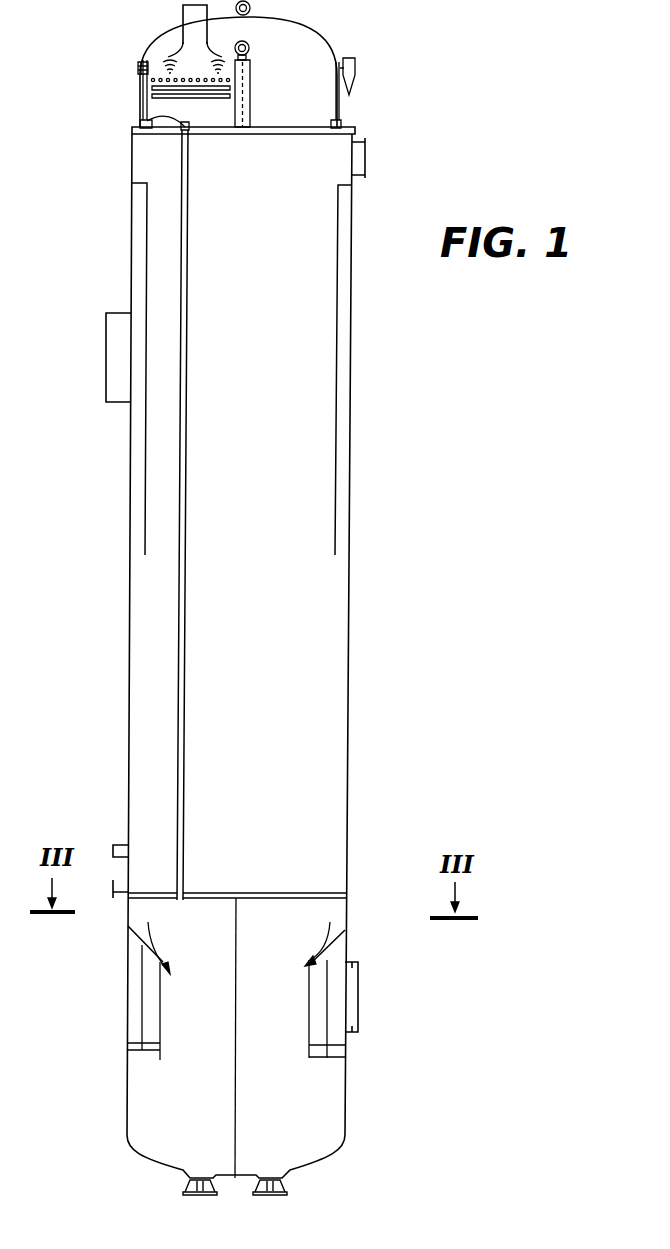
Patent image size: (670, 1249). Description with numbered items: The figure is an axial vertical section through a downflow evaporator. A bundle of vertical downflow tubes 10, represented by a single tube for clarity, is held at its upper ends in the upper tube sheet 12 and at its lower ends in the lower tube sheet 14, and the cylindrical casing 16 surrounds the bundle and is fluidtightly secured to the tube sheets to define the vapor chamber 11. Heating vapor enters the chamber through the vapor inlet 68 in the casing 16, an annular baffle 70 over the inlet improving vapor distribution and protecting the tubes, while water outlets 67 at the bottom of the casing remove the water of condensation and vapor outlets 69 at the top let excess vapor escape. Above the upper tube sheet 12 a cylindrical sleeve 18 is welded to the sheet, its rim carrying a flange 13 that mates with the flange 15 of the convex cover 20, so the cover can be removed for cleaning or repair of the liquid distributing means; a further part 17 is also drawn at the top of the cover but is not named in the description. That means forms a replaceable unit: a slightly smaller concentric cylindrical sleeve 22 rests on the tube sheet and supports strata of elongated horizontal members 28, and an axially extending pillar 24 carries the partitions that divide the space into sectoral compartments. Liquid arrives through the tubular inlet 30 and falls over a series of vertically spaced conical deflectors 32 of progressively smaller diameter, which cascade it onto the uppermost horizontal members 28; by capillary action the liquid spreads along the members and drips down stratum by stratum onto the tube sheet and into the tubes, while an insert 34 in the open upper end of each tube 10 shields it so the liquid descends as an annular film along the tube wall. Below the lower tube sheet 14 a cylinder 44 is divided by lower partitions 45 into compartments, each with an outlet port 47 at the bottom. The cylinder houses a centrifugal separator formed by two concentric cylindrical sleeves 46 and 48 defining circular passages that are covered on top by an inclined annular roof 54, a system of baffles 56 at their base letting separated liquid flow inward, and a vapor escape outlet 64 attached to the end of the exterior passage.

The downflow tubes 10 is at (178, 618).
The vapor chamber 11 is at (223, 652).
The upper tube sheet 12 is at (152, 135).
The flange 13 is at (141, 72).
The lower tube sheet 14 is at (153, 892).
The flange 15 is at (141, 60).
The cylindrical casing 16 is at (130, 566).
The gauge 17 is at (250, 47).
The cylindrical sleeve 18 is at (341, 100).
The convex cover 20 is at (333, 42).
The cylindrical sleeve 22 is at (341, 121).
The pillar 24 is at (252, 92).
The horizontal members 28 is at (188, 92).
The tubular inlet 30 is at (183, 20).
The conical deflectors 32 is at (172, 64).
The insert 34 is at (146, 117).
The cylinder 44 is at (345, 912).
The lower partitions 45 is at (235, 1098).
The inner cylindrical sleeve 46 is at (160, 980).
The outlet port 47 is at (197, 1187).
The cylindrical sleeve 48 is at (142, 1012).
The inclined annular roof 54 is at (133, 940).
The baffles 56 is at (150, 1045).
The vapor escape outlet 64 is at (358, 1003).
The water outlets 67 is at (113, 888).
The vapor inlet 68 is at (113, 348).
The vapor outlets 69 is at (365, 160).
The annular baffle 70 is at (146, 470).